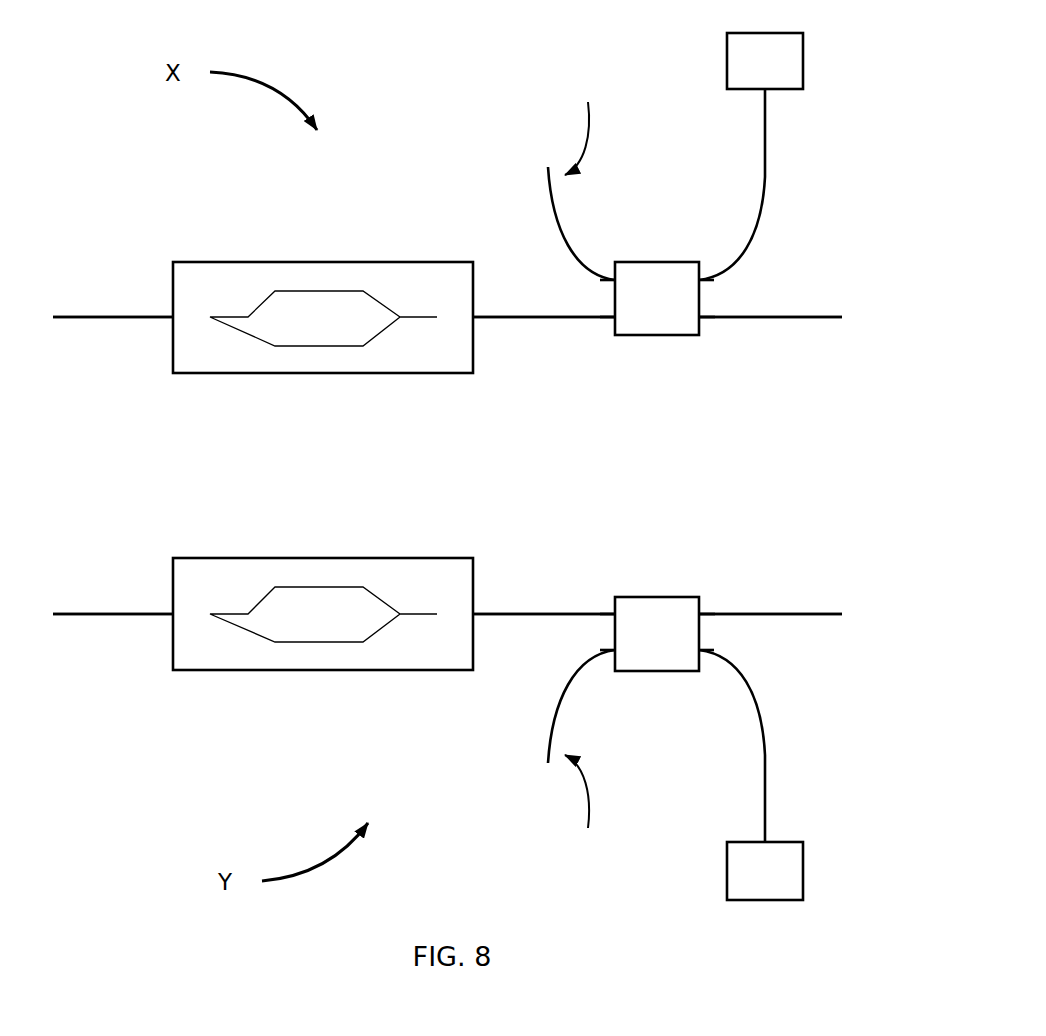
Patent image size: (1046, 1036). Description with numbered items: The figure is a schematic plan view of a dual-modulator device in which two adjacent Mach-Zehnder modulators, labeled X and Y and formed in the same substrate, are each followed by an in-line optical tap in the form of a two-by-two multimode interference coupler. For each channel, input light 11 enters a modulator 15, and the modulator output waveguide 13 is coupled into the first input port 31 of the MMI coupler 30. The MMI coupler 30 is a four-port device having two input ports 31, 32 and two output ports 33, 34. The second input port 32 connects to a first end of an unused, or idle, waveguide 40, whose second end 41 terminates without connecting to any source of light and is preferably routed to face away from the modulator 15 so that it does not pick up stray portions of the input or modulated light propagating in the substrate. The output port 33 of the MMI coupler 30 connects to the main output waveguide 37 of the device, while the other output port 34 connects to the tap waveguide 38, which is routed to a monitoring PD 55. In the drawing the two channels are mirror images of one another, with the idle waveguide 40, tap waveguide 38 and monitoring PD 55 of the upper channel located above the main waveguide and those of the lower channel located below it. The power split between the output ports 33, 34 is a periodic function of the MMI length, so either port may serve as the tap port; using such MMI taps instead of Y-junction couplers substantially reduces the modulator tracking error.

The input light 11 is at (108, 317).
The modulator output waveguide 13 is at (502, 317).
The modulator 15 is at (315, 262).
The MMI coupler 30 is at (672, 335).
The first input port 31 is at (613, 320).
The second input port 32 is at (601, 270).
The first output port 33 is at (702, 320).
The second output port 34 is at (703, 270).
The main output waveguide 37 is at (773, 315).
The tap waveguide 38 is at (757, 217).
The unused waveguide 40 is at (567, 230).
The second end 41 is at (583, 467).
The monitoring PD 55 is at (727, 48).